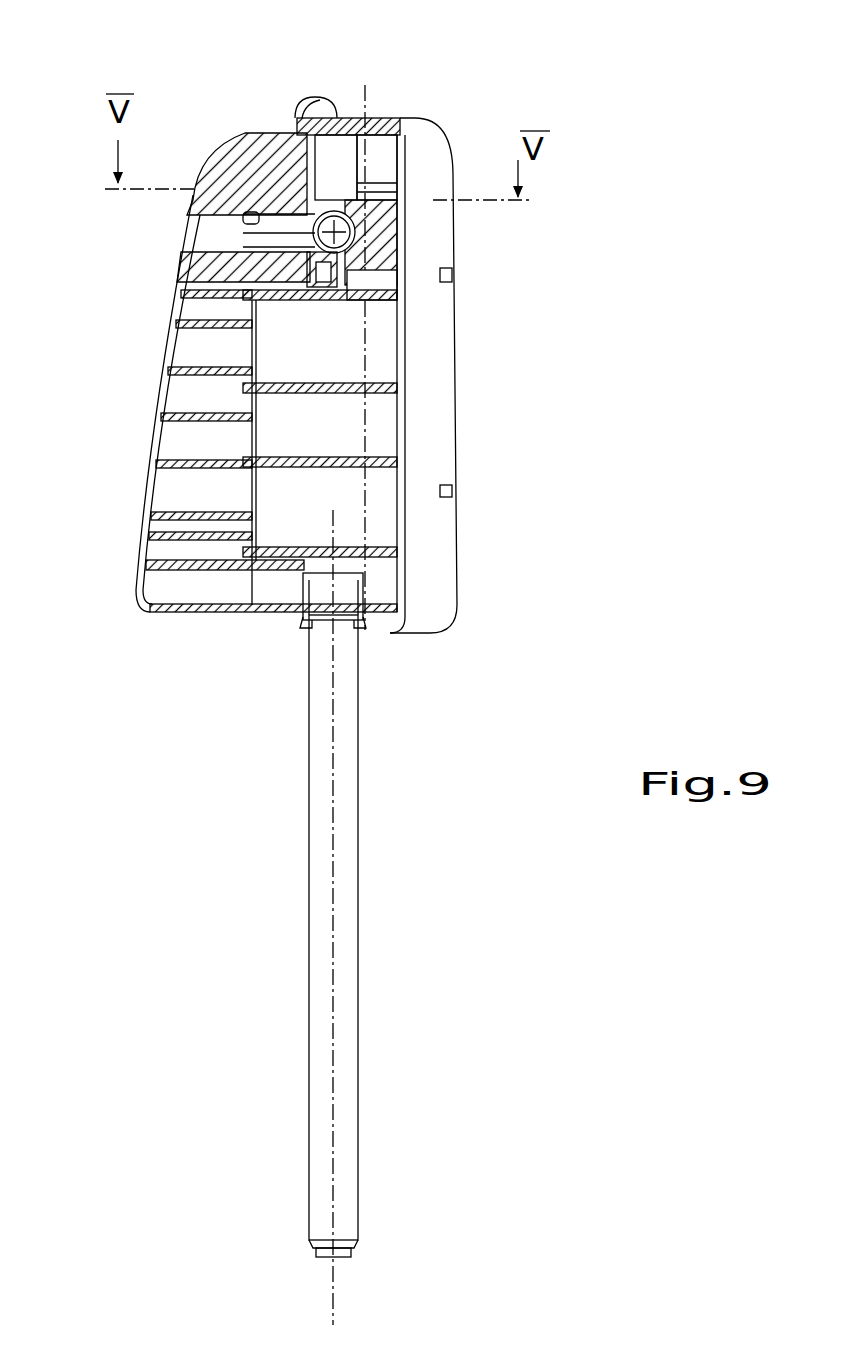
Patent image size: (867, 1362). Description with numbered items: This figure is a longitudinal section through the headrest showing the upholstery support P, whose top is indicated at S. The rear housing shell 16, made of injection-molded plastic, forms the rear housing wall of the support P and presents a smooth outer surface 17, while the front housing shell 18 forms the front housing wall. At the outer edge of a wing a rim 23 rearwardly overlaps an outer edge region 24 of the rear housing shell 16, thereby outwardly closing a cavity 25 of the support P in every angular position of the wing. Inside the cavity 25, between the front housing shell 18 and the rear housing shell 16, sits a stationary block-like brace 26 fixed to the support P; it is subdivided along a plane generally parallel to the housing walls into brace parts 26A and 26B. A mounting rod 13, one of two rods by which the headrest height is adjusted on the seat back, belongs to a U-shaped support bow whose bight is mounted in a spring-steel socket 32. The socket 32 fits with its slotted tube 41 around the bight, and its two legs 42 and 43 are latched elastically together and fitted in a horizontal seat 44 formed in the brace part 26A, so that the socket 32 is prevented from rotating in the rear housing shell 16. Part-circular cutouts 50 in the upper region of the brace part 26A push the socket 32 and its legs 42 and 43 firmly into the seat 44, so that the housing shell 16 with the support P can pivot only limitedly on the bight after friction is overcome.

The mounting rod 13 is at (295, 723).
The rear housing shell 16 is at (153, 346).
The smooth outer surface 17 is at (148, 402).
The front housing shell 18 is at (452, 113).
The rim 23 is at (313, 92).
The outer edge region 24 is at (347, 112).
The cavity 25 is at (400, 360).
The brace 26 is at (232, 575).
The brace part 26A is at (173, 581).
The brace part 26B is at (410, 428).
The spring-steel socket 32 is at (322, 198).
The slotted tube 41 is at (370, 232).
The socket leg 42 is at (285, 231).
The socket leg 43 is at (286, 262).
The horizontal seat 44 is at (208, 203).
The part-circular cutouts 50 is at (343, 270).
The top of the support S is at (395, 112).
The upholstery support P is at (483, 134).